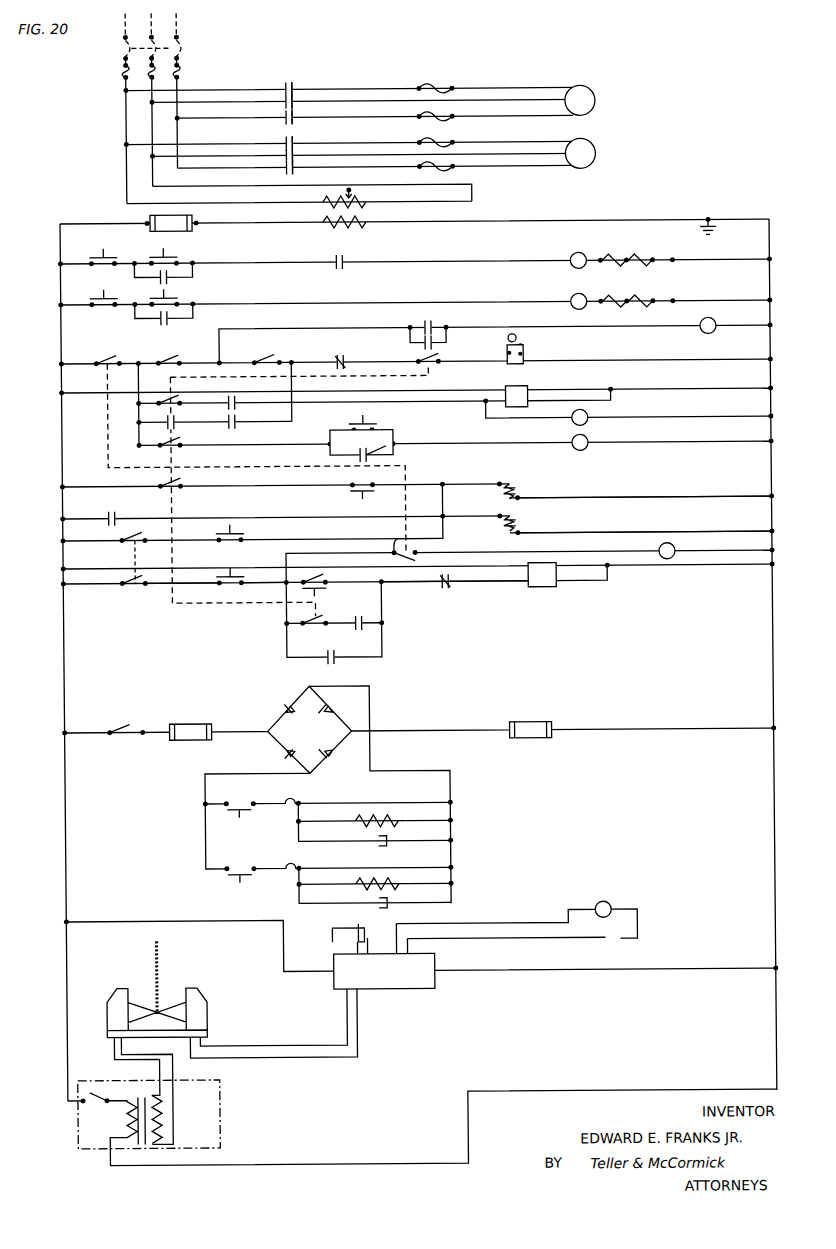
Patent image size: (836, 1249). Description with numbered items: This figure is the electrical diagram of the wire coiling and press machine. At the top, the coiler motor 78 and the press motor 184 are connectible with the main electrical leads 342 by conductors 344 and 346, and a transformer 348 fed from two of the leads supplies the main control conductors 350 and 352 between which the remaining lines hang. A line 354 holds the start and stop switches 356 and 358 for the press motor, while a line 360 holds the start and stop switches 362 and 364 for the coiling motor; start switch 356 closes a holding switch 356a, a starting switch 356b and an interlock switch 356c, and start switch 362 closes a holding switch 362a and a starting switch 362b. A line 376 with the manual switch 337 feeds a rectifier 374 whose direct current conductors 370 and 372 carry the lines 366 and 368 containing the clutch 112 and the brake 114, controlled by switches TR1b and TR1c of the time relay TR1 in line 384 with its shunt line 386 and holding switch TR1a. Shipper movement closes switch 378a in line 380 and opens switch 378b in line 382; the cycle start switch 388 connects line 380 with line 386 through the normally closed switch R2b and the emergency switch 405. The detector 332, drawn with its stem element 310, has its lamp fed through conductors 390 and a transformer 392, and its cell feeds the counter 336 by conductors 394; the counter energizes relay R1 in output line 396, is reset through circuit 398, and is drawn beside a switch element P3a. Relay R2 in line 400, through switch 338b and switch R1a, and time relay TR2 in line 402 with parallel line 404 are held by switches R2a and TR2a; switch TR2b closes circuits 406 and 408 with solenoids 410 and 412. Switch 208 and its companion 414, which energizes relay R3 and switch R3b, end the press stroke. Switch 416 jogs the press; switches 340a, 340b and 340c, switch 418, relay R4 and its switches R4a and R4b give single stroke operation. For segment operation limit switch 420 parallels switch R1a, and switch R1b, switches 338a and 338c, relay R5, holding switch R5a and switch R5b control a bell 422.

The main or coiler motor 78 is at (588, 94).
The press motor 184 is at (590, 148).
The main electrical leads 342 is at (187, 20).
The conductors 344 is at (248, 104).
The conductors 346 is at (190, 168).
The transformer 348 is at (352, 228).
The main control conductor 350 is at (60, 252).
The main control conductor 352 is at (770, 227).
The line 354 is at (412, 305).
The start switch 356 is at (176, 300).
The holding switch 356a is at (177, 349).
The starting switch 356b is at (309, 168).
The interlock switch 356c is at (338, 259).
The stop switch 358 is at (97, 299).
The line 360 is at (412, 264).
The start switch 362 is at (176, 258).
The holding switch 362a is at (165, 306).
The starting switch 362b is at (302, 106).
The stop switch 364 is at (97, 258).
The switch 208 is at (106, 356).
The manually operable switch 338a is at (166, 360).
The manually operable switch 338b is at (154, 404).
The manually operable switch 338c is at (434, 358).
The limit switch 420 is at (272, 348).
The switch R5b is at (337, 358).
The holding switch R5a is at (408, 344).
The switch R1b is at (424, 319).
The bell 422 is at (526, 356).
The relay R5 is at (710, 336).
The switch R1a is at (232, 402).
The switch TR2a is at (170, 422).
The switch R2a is at (232, 425).
The manually operable switch 340a is at (170, 444).
The line 402 is at (430, 393).
The time relay TR2 is at (518, 389).
The line 404 is at (564, 402).
The line 400 is at (420, 408).
The manually operable switch 418 is at (352, 432).
The holding switch R4a is at (391, 446).
The relay R2 is at (588, 421).
The relay R4 is at (584, 452).
The manually operable switch 340b is at (180, 486).
The switch TR2b is at (345, 501).
The switch R4b is at (112, 518).
The switch 378b is at (128, 538).
The manually operable switch 416 is at (238, 537).
The line 382 is at (280, 541).
The switch 414 is at (390, 547).
The solenoid 410 is at (514, 492).
The circuit 406 is at (570, 501).
The solenoid 412 is at (516, 526).
The circuit 408 is at (572, 536).
The relay R3 is at (666, 548).
The time relay TR1 is at (530, 566).
The line 380 is at (180, 582).
The line 384 is at (232, 576).
The cycle start switch 388 is at (318, 578).
The switch 378a is at (128, 588).
The switch 405 is at (242, 586).
The manually operable switch 340c is at (314, 622).
The switch R3b is at (366, 618).
The switch R2b is at (442, 590).
The line 386 is at (486, 588).
The switch TR1a is at (330, 656).
The rectifier 374 is at (304, 688).
The manually operable switch 337 is at (118, 730).
The line 376 is at (222, 722).
The conductor 370 is at (200, 830).
The switch TR1b is at (228, 804).
The switch TR1c is at (232, 868).
The line 366 is at (352, 820).
The clutch 112 is at (374, 818).
The brake 114 is at (374, 880).
The line 368 is at (353, 883).
The conductor 372 is at (458, 837).
The relay R1 is at (597, 905).
The pressure switch P3a is at (330, 938).
The reset circuit 398 is at (376, 944).
The output line 396 is at (470, 942).
The counter 336 is at (385, 985).
The valve stem 310 is at (150, 962).
The detector 332 is at (102, 1004).
The conductors 394 is at (250, 1046).
The conductors 390 is at (110, 1044).
The transformer 392 is at (134, 1150).